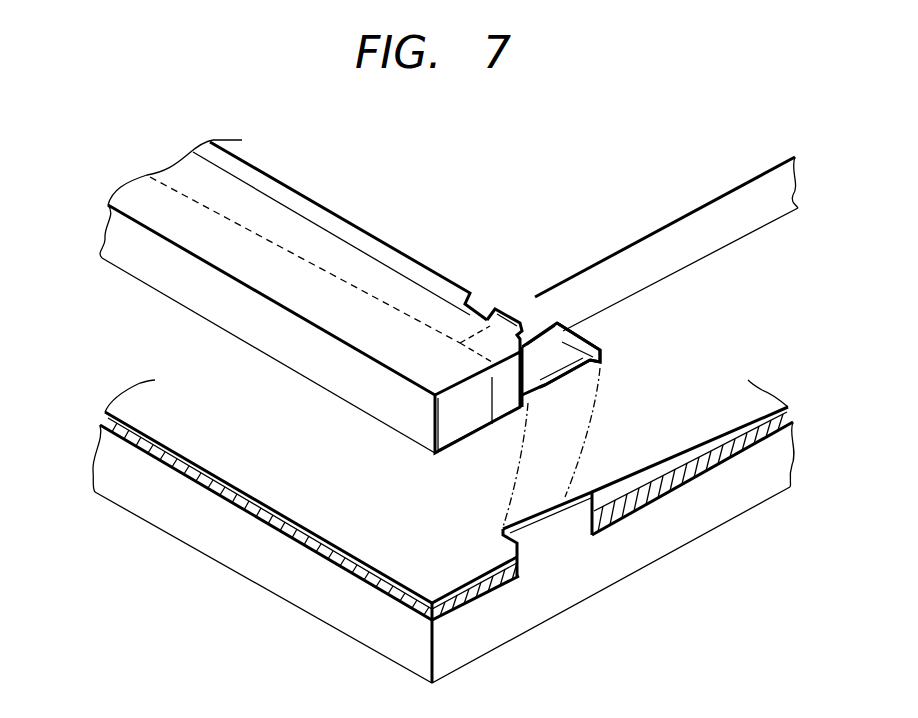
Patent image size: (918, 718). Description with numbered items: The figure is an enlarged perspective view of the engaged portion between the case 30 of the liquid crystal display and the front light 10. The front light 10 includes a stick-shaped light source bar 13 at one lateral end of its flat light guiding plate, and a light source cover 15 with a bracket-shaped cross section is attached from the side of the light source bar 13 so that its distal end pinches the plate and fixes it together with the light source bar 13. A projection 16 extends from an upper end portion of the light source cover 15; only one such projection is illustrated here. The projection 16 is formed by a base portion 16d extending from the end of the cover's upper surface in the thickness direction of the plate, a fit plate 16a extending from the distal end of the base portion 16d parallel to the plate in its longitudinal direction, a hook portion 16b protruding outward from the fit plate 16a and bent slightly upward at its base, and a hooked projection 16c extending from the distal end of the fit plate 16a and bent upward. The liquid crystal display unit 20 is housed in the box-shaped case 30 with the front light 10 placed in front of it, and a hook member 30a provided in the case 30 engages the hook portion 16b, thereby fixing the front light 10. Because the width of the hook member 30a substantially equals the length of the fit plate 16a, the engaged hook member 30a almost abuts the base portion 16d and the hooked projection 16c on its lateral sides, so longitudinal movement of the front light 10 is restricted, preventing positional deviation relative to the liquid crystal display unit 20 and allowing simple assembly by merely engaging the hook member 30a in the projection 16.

The front light 10 is at (730, 133).
The light source bar 13 is at (150, 190).
The light source cover 15 is at (115, 243).
The projection 16 is at (543, 325).
The fit plate 16a is at (545, 357).
The hook portion 16b is at (588, 362).
The hooked projection 16c is at (567, 327).
The base portion 16d is at (515, 378).
The liquid crystal display unit 20 is at (722, 388).
The case 30 is at (775, 473).
The hook member 30a is at (562, 537).